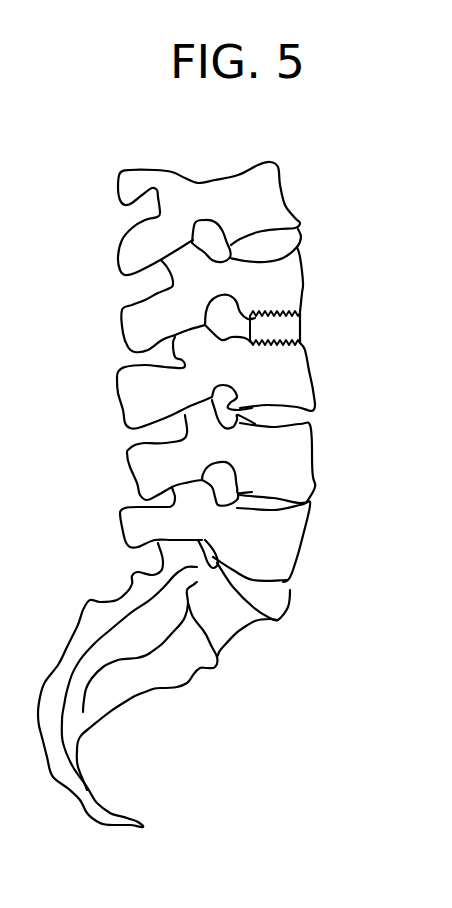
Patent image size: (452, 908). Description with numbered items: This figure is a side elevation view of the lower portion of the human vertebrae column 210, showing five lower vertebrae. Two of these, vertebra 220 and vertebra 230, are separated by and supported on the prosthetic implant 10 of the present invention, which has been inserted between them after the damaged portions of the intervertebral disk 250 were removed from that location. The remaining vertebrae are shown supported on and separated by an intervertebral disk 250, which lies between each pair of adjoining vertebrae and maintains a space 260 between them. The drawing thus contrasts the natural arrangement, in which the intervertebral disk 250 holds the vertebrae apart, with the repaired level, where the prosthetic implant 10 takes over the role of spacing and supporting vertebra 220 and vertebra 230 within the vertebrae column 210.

The vertebrae column 210 is at (300, 188).
The vertebra 220 is at (293, 278).
The vertebra 230 is at (287, 382).
The space 260 is at (305, 490).
The intervertebral disk 250 is at (283, 242).
The prosthetic implant 10 is at (290, 330).